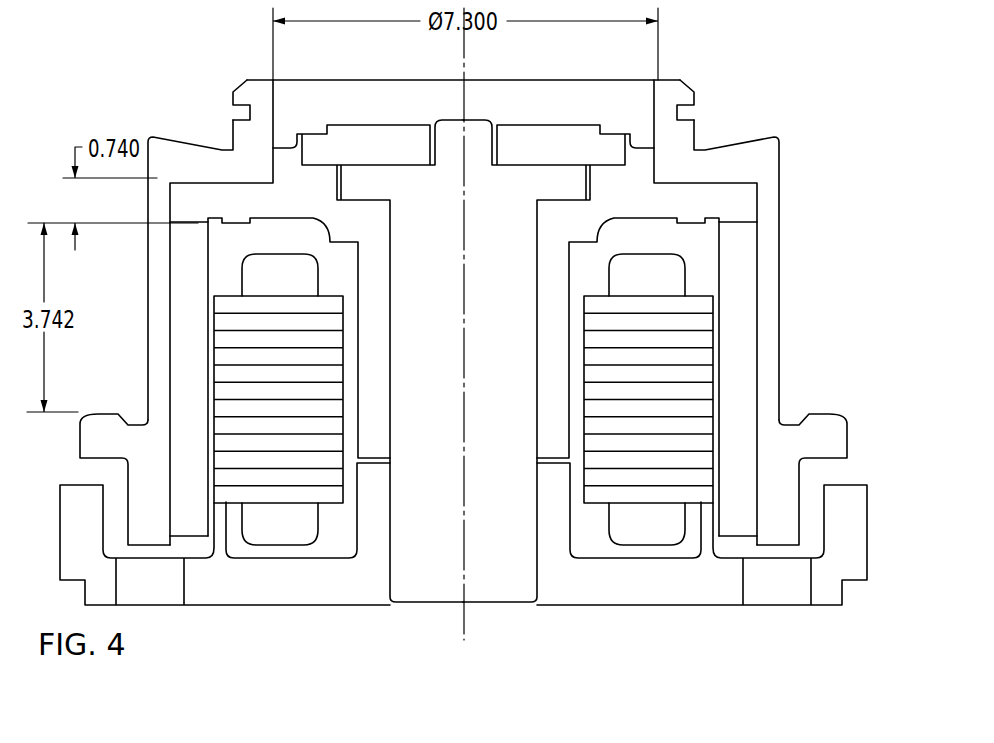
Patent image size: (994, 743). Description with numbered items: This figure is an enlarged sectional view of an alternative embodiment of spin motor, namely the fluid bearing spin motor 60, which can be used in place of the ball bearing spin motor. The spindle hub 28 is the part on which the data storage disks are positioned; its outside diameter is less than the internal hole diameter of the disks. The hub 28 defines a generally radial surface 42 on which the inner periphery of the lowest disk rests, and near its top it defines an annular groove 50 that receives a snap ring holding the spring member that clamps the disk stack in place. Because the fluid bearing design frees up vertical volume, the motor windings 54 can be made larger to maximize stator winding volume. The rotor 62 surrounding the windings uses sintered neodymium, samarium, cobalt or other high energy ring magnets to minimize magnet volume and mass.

The spindle hub 28 is at (155, 262).
The generally radial surface 42 is at (108, 412).
The annular groove 50 is at (233, 110).
The motor windings 54 is at (648, 533).
The fluid bearing spin motor 60 is at (797, 213).
The rotor 62 is at (772, 302).